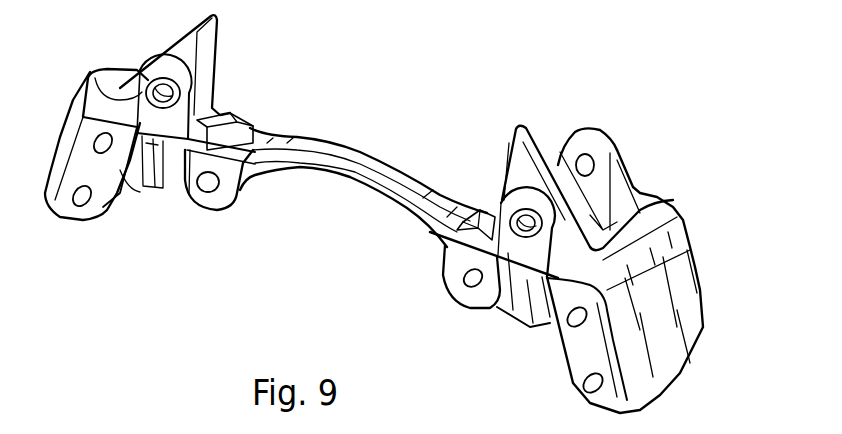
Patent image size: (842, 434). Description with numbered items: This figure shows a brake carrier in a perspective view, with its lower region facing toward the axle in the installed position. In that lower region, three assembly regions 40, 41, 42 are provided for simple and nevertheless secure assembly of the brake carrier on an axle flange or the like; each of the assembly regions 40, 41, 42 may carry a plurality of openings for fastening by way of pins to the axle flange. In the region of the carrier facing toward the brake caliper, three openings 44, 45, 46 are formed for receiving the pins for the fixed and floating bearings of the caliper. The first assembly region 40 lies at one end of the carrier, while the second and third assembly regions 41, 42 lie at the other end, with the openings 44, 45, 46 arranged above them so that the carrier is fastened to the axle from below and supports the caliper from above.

The assembly region 40 is at (102, 218).
The assembly region 41 is at (696, 249).
The assembly region 42 is at (573, 367).
The opening 44 is at (162, 90).
The opening 45 is at (516, 220).
The opening 46 is at (590, 160).